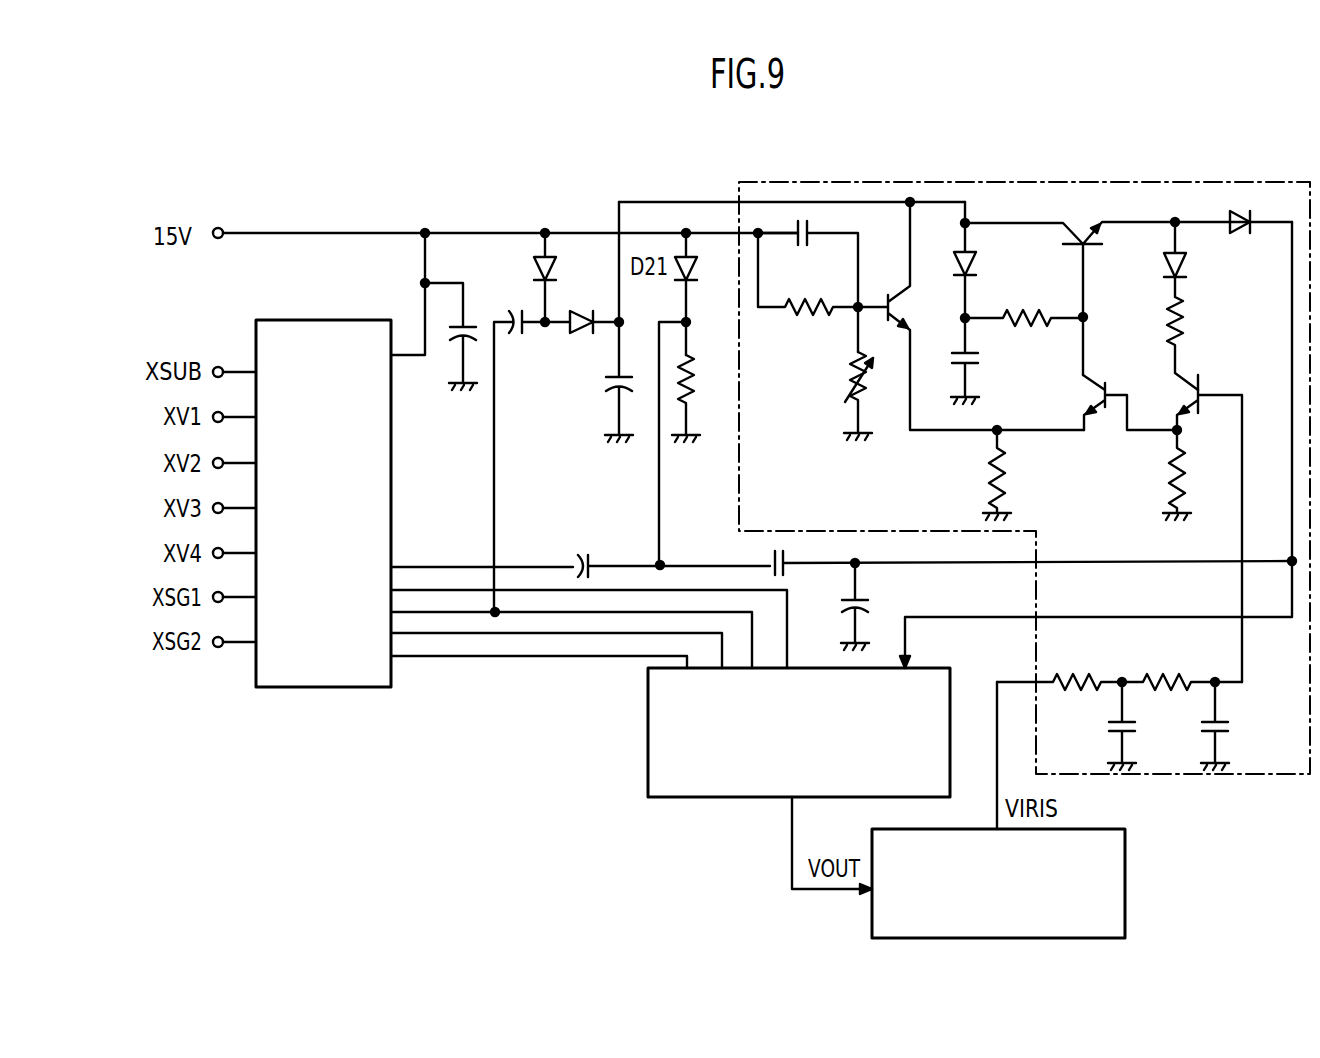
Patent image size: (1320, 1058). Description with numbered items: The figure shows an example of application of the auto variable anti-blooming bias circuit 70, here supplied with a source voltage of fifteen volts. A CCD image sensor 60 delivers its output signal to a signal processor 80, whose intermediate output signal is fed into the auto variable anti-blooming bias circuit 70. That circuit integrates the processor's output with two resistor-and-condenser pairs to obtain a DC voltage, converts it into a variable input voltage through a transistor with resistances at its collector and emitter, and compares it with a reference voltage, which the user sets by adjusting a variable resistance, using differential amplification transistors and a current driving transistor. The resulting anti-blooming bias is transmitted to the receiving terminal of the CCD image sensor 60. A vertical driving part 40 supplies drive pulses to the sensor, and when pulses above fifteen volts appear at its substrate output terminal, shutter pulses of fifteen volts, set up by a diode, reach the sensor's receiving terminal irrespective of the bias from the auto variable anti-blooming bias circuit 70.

The vertical driving part 40 is at (306, 325).
The CCD image sensor 60 is at (648, 743).
The auto variable anti-blooming bias circuit 70 is at (1022, 182).
The signal processor 80 is at (1125, 860).